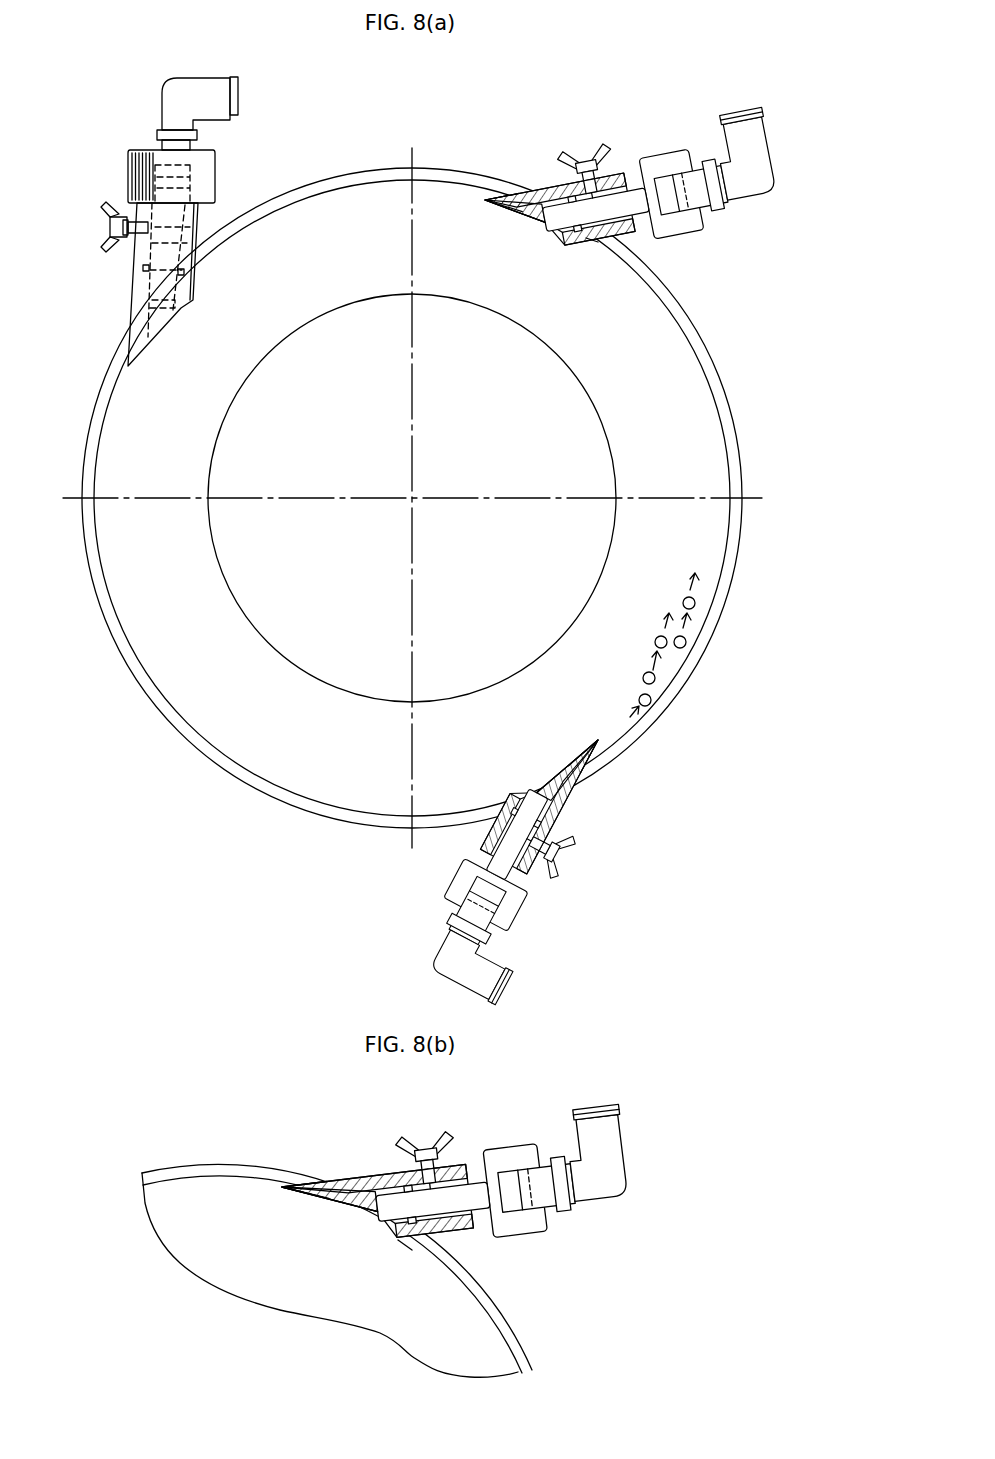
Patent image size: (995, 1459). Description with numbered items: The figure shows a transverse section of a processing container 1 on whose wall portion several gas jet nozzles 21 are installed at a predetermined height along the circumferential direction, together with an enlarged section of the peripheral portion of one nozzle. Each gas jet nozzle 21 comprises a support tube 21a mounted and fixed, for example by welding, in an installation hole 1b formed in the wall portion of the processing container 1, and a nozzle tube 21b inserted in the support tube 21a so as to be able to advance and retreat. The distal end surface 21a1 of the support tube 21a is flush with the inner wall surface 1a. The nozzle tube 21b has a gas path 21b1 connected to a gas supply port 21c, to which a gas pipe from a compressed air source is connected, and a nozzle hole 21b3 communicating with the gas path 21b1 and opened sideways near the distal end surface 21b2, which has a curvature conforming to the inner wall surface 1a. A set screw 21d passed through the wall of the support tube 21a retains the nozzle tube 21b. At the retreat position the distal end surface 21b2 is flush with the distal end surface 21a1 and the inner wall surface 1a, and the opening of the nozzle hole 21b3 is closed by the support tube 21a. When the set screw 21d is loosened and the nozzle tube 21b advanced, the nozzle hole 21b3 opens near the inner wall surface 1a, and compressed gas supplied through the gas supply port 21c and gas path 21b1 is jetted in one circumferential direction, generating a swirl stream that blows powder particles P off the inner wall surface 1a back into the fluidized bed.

In FIG. 8a, the processing container 1 is at (714, 362).
In FIG. 8a, the inner wall surface 1a is at (718, 405).
In FIG. 8a, the installation hole 1b is at (589, 237).
In FIG. 8b, the installation hole 1b is at (404, 1246).
In FIG. 8a, the gas jet nozzle 21 is at (112, 167).
In FIG. 8b, the gas jet nozzle 21 is at (450, 1124).
In FIG. 8a, the support tube 21a is at (556, 178).
In FIG. 8b, the support tube 21a is at (362, 1180).
In FIG. 8a, the distal end surface 21a1 is at (576, 240).
In FIG. 8b, the distal end surface 21a1 is at (393, 1242).
In FIG. 8a, the nozzle tube 21b is at (600, 232).
In FIG. 8b, the nozzle tube 21b is at (447, 1240).
In FIG. 8a, the gas path 21b1 is at (630, 192).
In FIG. 8b, the gas path 21b1 is at (448, 1195).
In FIG. 8a, the distal end surface 21b2 is at (527, 220).
In FIG. 8b, the distal end surface 21b2 is at (351, 1215).
In FIG. 8a, the nozzle hole 21b3 is at (500, 205).
In FIG. 8b, the nozzle hole 21b3 is at (337, 1205).
In FIG. 8a, the gas supply port 21c is at (756, 176).
In FIG. 8b, the gas supply port 21c is at (612, 1172).
In FIG. 8a, the set screw 21d is at (608, 143).
In FIG. 8b, the set screw 21d is at (420, 1148).
In FIG. 8a, the powder particles P is at (651, 701).